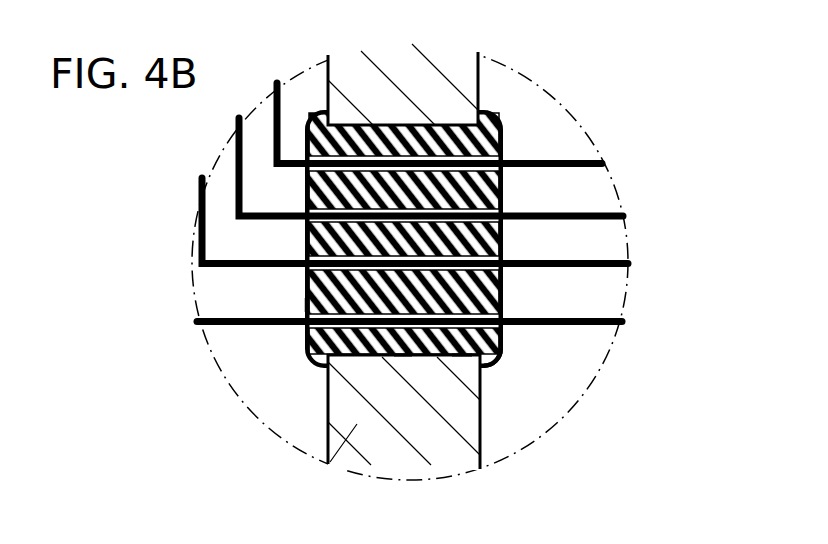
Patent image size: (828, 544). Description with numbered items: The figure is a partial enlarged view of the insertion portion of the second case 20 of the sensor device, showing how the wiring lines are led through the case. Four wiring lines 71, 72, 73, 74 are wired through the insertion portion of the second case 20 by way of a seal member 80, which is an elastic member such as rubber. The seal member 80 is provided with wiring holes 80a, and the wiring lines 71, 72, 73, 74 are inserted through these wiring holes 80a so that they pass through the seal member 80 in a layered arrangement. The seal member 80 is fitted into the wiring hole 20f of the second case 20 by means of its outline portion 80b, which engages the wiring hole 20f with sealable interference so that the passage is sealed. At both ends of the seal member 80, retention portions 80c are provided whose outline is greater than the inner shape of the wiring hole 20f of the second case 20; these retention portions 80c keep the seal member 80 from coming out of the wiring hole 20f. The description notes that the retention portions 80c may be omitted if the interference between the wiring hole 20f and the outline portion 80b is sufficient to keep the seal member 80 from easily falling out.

The seal member 80 is at (503, 125).
The wiring holes 80a is at (462, 357).
The outline portion 80b is at (403, 377).
The retention portions 80c is at (503, 370).
The wiring line 71 is at (580, 160).
The wiring line 72 is at (595, 212).
The wiring line 73 is at (593, 264).
The wiring line 74 is at (578, 324).
The second case 20 is at (328, 463).
The wiring hole 20f is at (307, 304).